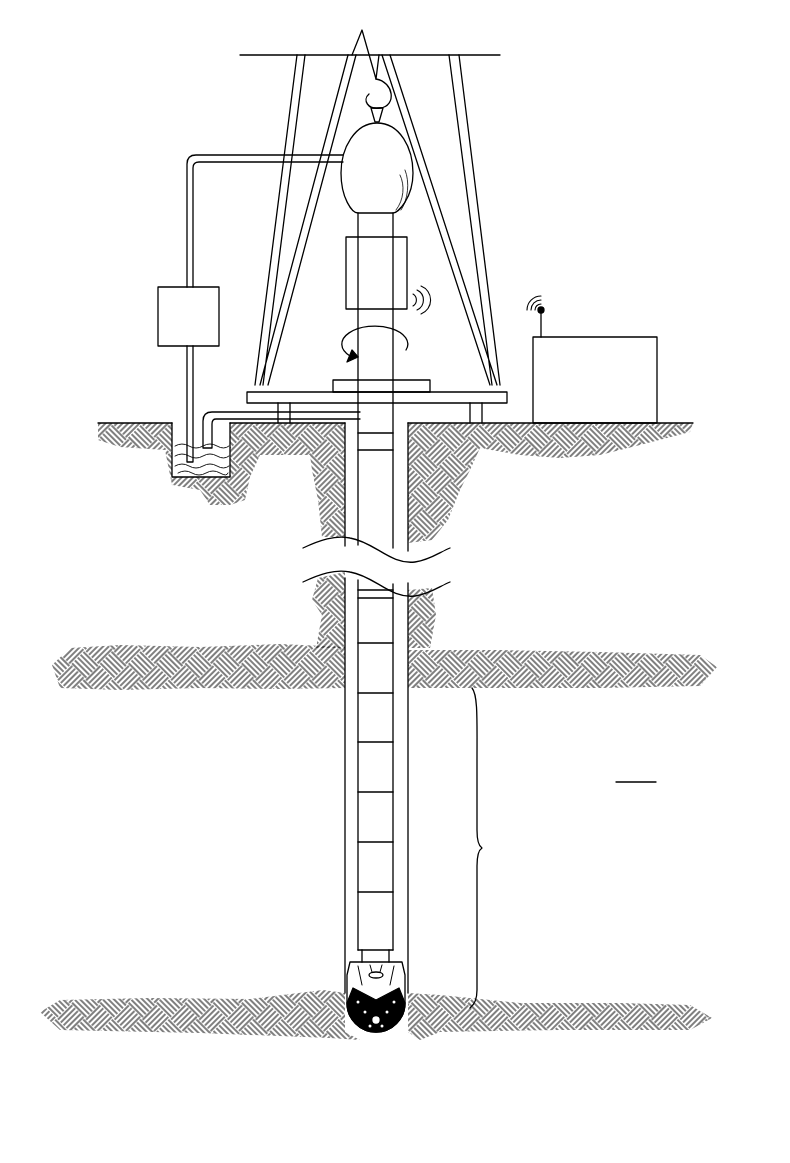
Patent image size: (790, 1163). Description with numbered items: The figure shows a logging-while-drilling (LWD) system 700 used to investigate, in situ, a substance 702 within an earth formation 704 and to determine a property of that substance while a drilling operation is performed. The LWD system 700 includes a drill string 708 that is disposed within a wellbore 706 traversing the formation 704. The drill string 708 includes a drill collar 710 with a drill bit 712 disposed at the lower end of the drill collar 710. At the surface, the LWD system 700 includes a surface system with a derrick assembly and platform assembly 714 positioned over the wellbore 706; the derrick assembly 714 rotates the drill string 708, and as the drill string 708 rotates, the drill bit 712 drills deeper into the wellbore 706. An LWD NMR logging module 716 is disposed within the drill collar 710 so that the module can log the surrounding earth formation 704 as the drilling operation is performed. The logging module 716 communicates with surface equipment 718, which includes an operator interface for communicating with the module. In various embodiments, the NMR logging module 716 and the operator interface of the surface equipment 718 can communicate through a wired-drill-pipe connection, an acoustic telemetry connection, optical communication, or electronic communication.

The logging-while-drilling (LWD) system 700 is at (536, 51).
The substance 702 is at (460, 782).
The earth formation 704 is at (578, 457).
The wellbore 706 is at (409, 652).
The drill string 708 is at (495, 848).
The drill collar 710 is at (365, 915).
The drill bit 712 is at (355, 990).
The derrick assembly and platform assembly 714 is at (482, 138).
The LWD NMR logging module 716 is at (365, 765).
The surface equipment 718 is at (596, 337).